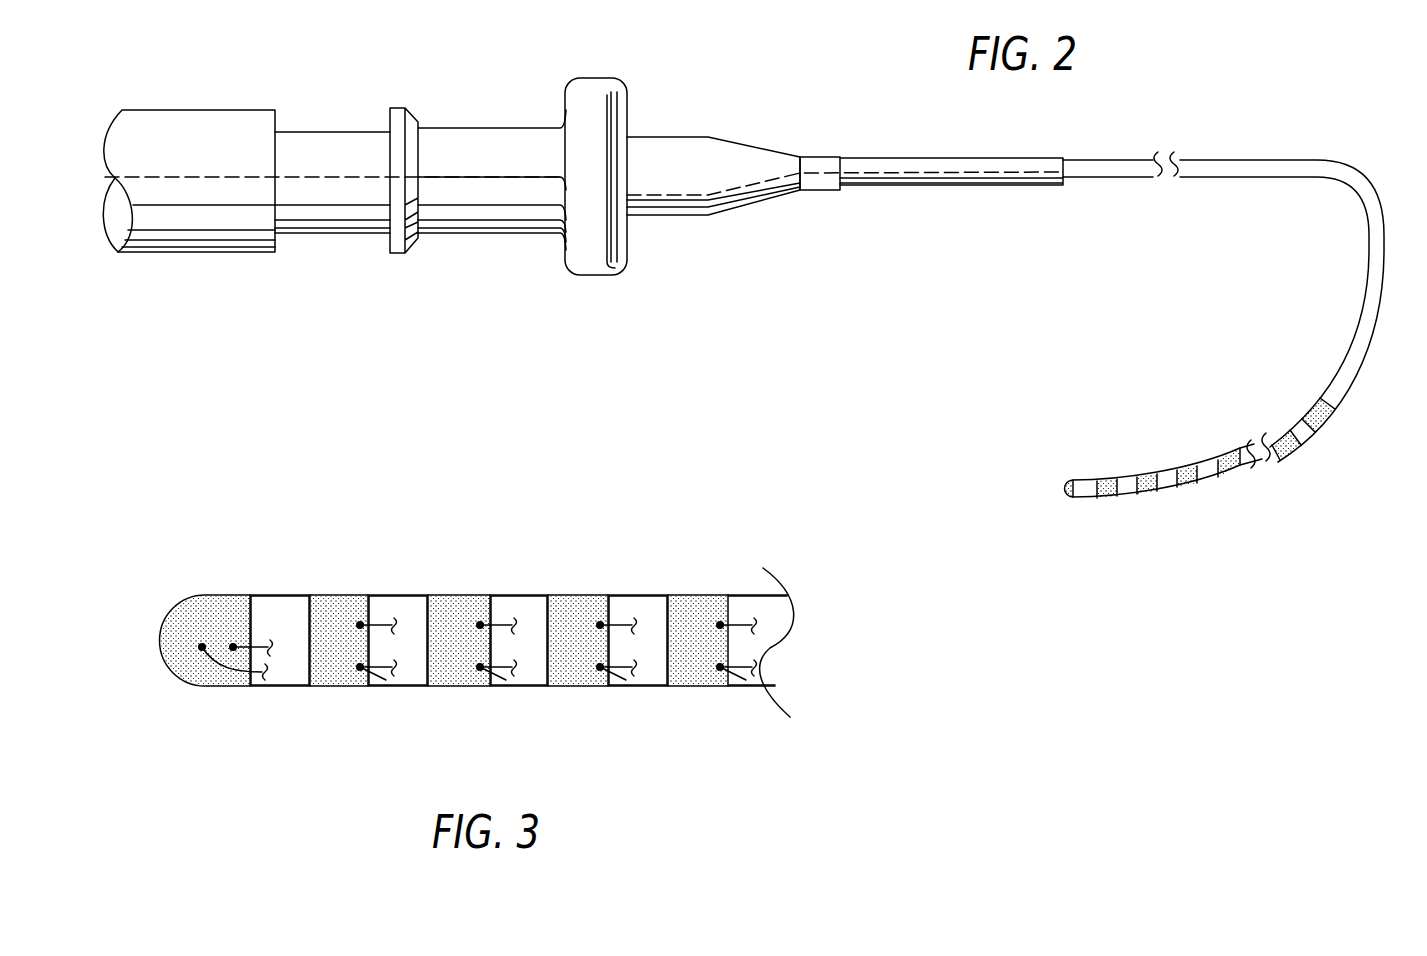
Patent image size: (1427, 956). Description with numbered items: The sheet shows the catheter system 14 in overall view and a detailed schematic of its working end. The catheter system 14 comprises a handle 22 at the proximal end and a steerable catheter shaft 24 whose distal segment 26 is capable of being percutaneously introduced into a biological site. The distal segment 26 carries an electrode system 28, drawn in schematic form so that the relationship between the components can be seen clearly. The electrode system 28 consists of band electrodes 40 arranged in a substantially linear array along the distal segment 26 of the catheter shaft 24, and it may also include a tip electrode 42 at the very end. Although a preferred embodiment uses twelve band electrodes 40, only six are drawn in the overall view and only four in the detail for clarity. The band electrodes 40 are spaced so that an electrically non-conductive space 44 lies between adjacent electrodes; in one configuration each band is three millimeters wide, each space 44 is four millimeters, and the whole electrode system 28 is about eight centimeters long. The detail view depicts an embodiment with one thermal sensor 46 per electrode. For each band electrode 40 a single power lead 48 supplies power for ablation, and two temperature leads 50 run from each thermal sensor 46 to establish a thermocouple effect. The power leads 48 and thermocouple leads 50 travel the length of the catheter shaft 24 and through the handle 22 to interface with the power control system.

In FIG. 2, the catheter system 14 is at (775, 118).
In FIG. 2, the handle 22 is at (198, 110).
In FIG. 2, the catheter shaft 24 is at (1378, 247).
In FIG. 2, the distal segment 26 is at (1240, 498).
In FIG. 2, the electrode system 28 is at (1276, 305).
In FIG. 3, the electrode system 28 is at (834, 506).
In FIG. 2, the band electrodes 40 is at (1220, 465).
In FIG. 3, the band electrodes 40 is at (348, 620).
In FIG. 2, the tip electrode 42 is at (1062, 492).
In FIG. 3, the tip electrode 42 is at (205, 604).
In FIG. 3, the electrically non-conductive space 44 is at (300, 597).
In FIG. 3, the thermal sensor 46 is at (202, 646).
In FIG. 3, the power lead 48 is at (256, 645).
In FIG. 3, the temperature leads 50 is at (258, 680).